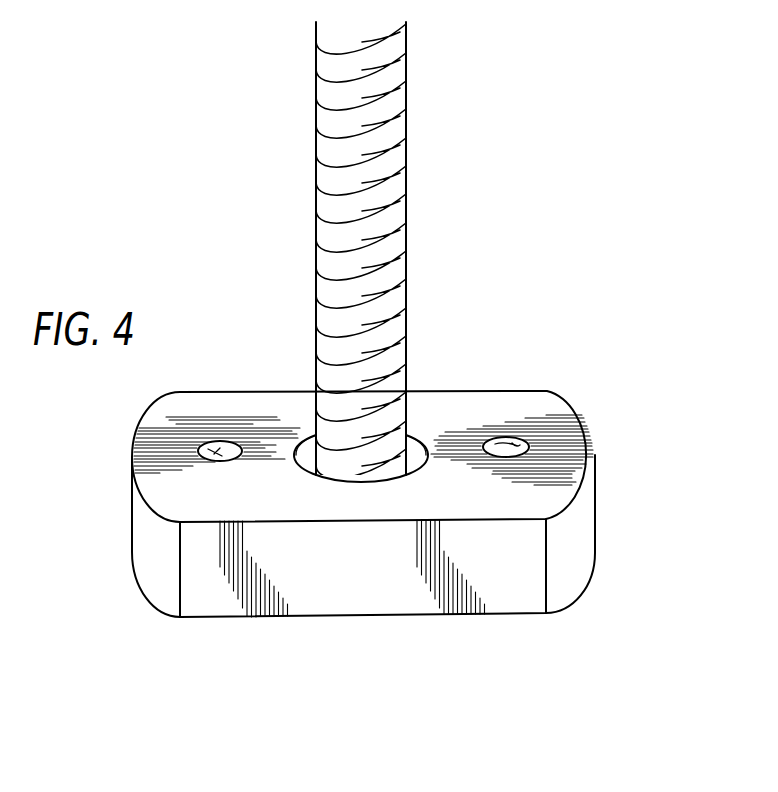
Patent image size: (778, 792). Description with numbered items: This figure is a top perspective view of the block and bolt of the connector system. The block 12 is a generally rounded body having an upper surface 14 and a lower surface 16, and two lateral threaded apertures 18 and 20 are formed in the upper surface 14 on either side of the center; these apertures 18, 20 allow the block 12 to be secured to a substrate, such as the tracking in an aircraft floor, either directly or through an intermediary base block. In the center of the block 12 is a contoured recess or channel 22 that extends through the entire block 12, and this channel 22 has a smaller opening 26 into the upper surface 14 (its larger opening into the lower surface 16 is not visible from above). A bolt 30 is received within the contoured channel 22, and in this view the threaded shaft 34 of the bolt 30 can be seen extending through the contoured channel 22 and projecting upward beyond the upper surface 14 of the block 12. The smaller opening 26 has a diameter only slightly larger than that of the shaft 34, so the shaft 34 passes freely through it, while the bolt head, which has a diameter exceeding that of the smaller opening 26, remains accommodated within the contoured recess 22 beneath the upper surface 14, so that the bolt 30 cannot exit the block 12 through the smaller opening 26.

The block 12 is at (566, 494).
The upper surface 14 is at (212, 400).
The lower surface 16 is at (227, 617).
The lateral threaded aperture 18 is at (215, 455).
The lateral threaded aperture 20 is at (520, 444).
The contoured recess or channel 22 is at (310, 440).
The smaller opening 26 is at (428, 438).
The bolt 30 is at (407, 250).
The threaded shaft 34 is at (392, 243).